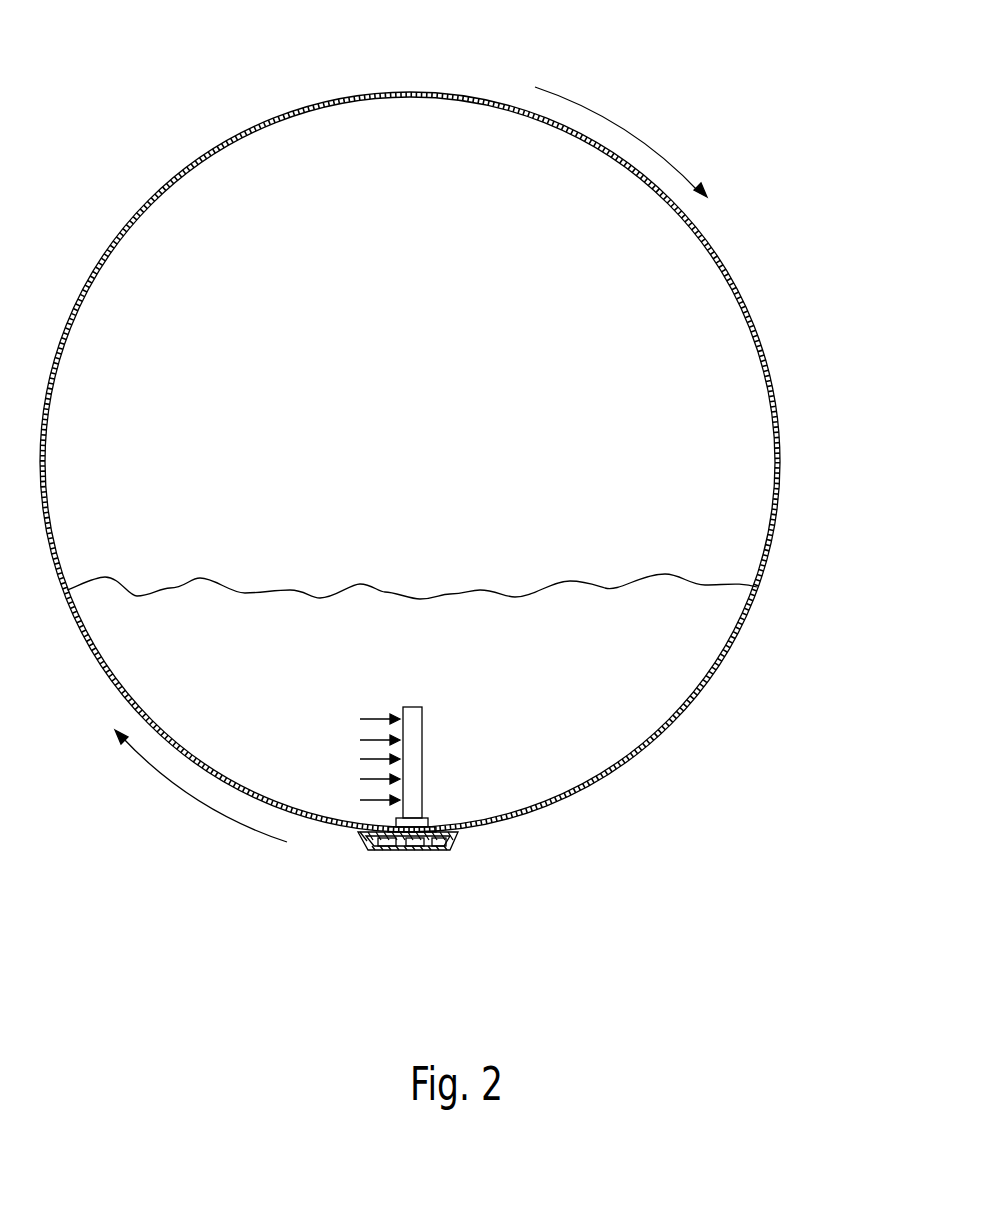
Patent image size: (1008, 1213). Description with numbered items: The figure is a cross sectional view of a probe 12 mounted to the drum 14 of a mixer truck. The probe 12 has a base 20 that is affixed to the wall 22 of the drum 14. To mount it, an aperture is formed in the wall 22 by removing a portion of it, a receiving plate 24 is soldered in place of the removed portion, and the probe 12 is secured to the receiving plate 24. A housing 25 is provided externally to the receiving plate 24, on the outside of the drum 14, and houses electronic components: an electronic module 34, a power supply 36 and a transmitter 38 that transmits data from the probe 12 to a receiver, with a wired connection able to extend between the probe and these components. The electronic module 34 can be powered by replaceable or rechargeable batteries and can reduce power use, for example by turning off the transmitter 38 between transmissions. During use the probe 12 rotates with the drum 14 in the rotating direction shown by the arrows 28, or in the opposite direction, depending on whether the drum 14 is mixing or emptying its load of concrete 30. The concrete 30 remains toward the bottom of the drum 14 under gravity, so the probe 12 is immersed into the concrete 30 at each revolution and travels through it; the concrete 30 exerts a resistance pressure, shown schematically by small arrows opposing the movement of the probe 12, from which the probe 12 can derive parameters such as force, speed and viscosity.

The probe 12 is at (512, 823).
The drum 14 is at (744, 300).
The base 20 is at (422, 818).
The wall 22 is at (122, 233).
The receiving plate 24 is at (443, 833).
The housing 25 is at (455, 845).
The arrows 28 is at (618, 125).
The concrete 30 is at (618, 625).
The electronic module 34 is at (387, 849).
The power supply 36 is at (420, 850).
The transmitter 38 is at (443, 848).